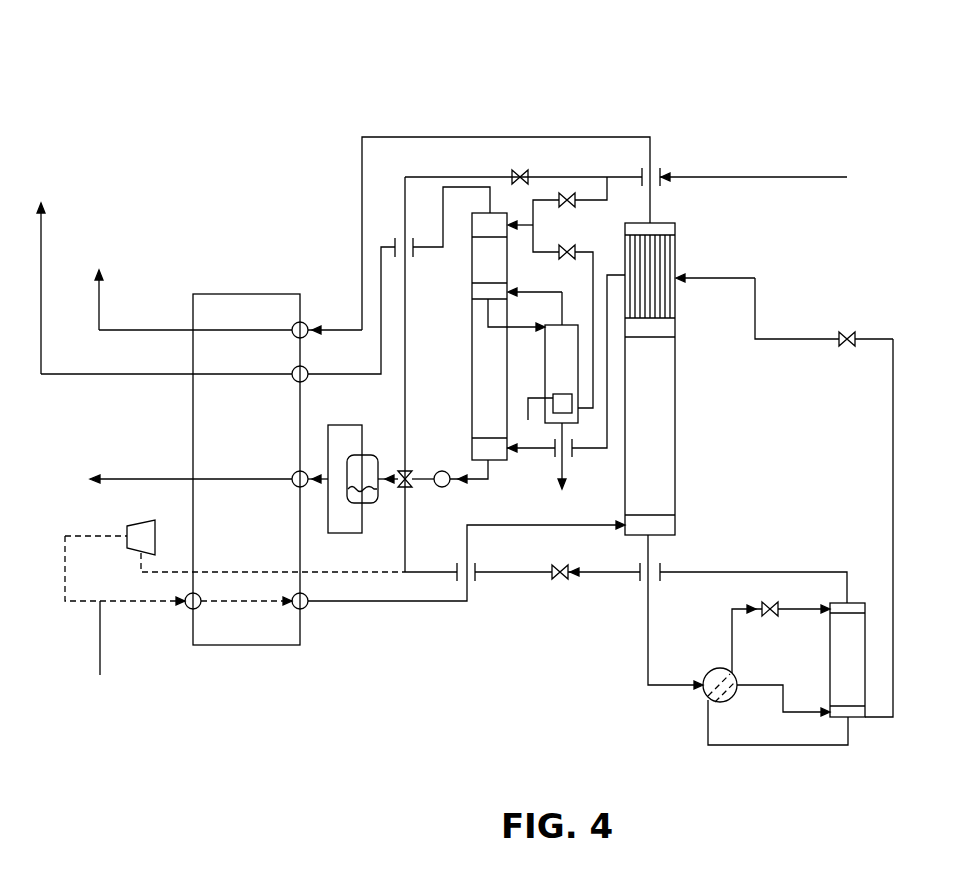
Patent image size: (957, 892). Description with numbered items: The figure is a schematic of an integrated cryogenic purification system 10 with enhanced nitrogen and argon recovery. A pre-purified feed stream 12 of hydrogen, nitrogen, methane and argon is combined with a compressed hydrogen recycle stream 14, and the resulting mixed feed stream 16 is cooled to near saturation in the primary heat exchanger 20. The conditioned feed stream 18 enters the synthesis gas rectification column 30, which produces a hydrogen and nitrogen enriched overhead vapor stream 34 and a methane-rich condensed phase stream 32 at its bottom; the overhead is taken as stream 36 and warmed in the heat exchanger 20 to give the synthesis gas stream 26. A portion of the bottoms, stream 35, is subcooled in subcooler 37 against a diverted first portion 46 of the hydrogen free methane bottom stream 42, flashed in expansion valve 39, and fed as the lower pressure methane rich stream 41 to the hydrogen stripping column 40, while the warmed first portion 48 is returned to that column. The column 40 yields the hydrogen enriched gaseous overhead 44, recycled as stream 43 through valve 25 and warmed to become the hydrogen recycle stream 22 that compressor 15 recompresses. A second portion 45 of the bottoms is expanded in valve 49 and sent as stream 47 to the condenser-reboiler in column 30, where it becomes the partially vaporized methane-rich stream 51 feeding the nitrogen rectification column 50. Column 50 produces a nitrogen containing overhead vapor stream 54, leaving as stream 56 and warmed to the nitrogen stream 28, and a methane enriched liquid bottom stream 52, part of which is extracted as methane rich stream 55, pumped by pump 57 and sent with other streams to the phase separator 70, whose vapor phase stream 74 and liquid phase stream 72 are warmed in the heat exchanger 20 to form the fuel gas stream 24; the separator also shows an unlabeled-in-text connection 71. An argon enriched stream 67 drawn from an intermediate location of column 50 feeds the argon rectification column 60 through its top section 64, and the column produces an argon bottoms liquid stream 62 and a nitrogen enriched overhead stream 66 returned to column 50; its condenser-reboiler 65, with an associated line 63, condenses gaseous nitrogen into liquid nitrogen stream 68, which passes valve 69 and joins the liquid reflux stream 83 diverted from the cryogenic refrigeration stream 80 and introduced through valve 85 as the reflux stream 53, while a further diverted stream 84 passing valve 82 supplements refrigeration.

The integrated cryogenic purification system 10 is at (106, 62).
The pre-purified feed stream 12 is at (101, 656).
The compressed hydrogen recycle stream 14 is at (65, 574).
The compressor 15 is at (136, 528).
The mixed feed stream 16 is at (138, 601).
The conditioned feed stream 18 is at (386, 601).
The primary heat exchanger 20 is at (240, 645).
The warmed hydrogen recycle stream 22 is at (172, 572).
The methane containing fuel gas stream 24 is at (128, 479).
The valve 25 is at (560, 580).
The hydrogen and nitrogen containing synthesis gas stream 26 is at (122, 330).
The warmed nitrogen containing vapor stream 28 is at (128, 374).
The synthesis gas rectification column 30 is at (675, 450).
The methane-rich condensed phase stream 32 is at (665, 527).
The hydrogen and nitrogen enriched overhead vapor stream 34 is at (665, 229).
The methane rich condensed phase stream portion 35 is at (650, 620).
The overhead vapor stream 36 is at (603, 137).
The subcooler 37 is at (704, 693).
The expansion valve 39 is at (768, 602).
The hydrogen stripping column 40 is at (856, 690).
The lower pressure methane rich stream 41 is at (797, 612).
The hydrogen free methane bottom stream 42 is at (854, 712).
The hydrogen recycle stream 43 is at (752, 573).
The hydrogen enriched gaseous overhead 44 is at (868, 608).
The second portion of hydrogen free methane bottom stream 45 is at (893, 452).
The diverted first portion of hydrogen free methane bottom stream 46 is at (757, 745).
The expanded methane stream 47 is at (755, 303).
The warmed first portion of hydrogen free methane bottom stream 48 is at (757, 685).
The valve 49 is at (850, 332).
The nitrogen rectification column 50 is at (478, 366).
The partially vaporized hydrogen free methane-rich stream 51 is at (600, 450).
The methane enriched liquid bottom stream 52 is at (497, 452).
The liquid nitrogen reflux stream 53 is at (533, 200).
The nitrogen containing overhead vapor stream 54 is at (478, 226).
The methane rich stream 55 is at (470, 480).
The nitrogen containing overhead vapor stream 56 is at (446, 228).
The pump 57 is at (442, 488).
The argon rectification column 60 is at (545, 358).
The argon bottoms liquid stream 62 is at (560, 490).
The line 63 is at (528, 420).
The vessel top 64 is at (568, 326).
The condenser-reboiler 65 is at (566, 403).
The nitrogen enriched overhead stream 66 is at (530, 292).
The argon enriched stream 67 is at (514, 327).
The liquid nitrogen stream 68 is at (594, 276).
The valve 69 is at (569, 246).
The phase separator 70 is at (368, 455).
The line 71 is at (328, 487).
The liquid phase stream 72 is at (344, 533).
The vapor phase stream 74 is at (344, 425).
The cryogenic refrigeration stream 80 is at (772, 177).
The valve 82 is at (520, 170).
The diverted portion of liquid nitrogen stream 83 is at (607, 190).
The diverted refrigeration stream 84 is at (405, 330).
The valve 85 is at (567, 208).